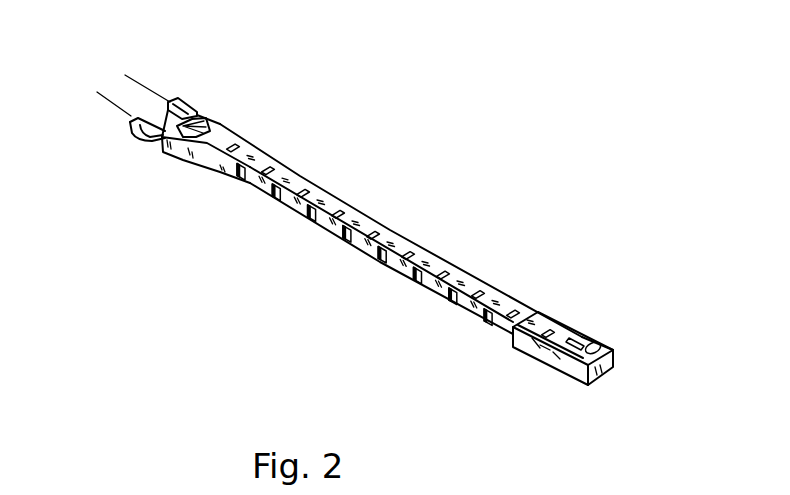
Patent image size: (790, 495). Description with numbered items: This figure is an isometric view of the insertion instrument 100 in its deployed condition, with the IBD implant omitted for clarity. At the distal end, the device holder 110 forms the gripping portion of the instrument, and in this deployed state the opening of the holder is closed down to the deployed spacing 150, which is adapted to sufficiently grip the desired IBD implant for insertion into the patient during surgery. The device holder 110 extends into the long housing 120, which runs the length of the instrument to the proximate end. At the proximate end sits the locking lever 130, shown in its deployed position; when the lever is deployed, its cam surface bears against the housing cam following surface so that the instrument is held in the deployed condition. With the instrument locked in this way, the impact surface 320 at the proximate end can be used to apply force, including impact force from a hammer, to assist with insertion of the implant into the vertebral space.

The insertion instrument 100 is at (386, 116).
The device holder 110 is at (190, 84).
The housing 120 is at (396, 222).
The locking lever 130 is at (560, 371).
The deployed spacing 150 is at (183, 52).
The impact surface 320 is at (610, 368).